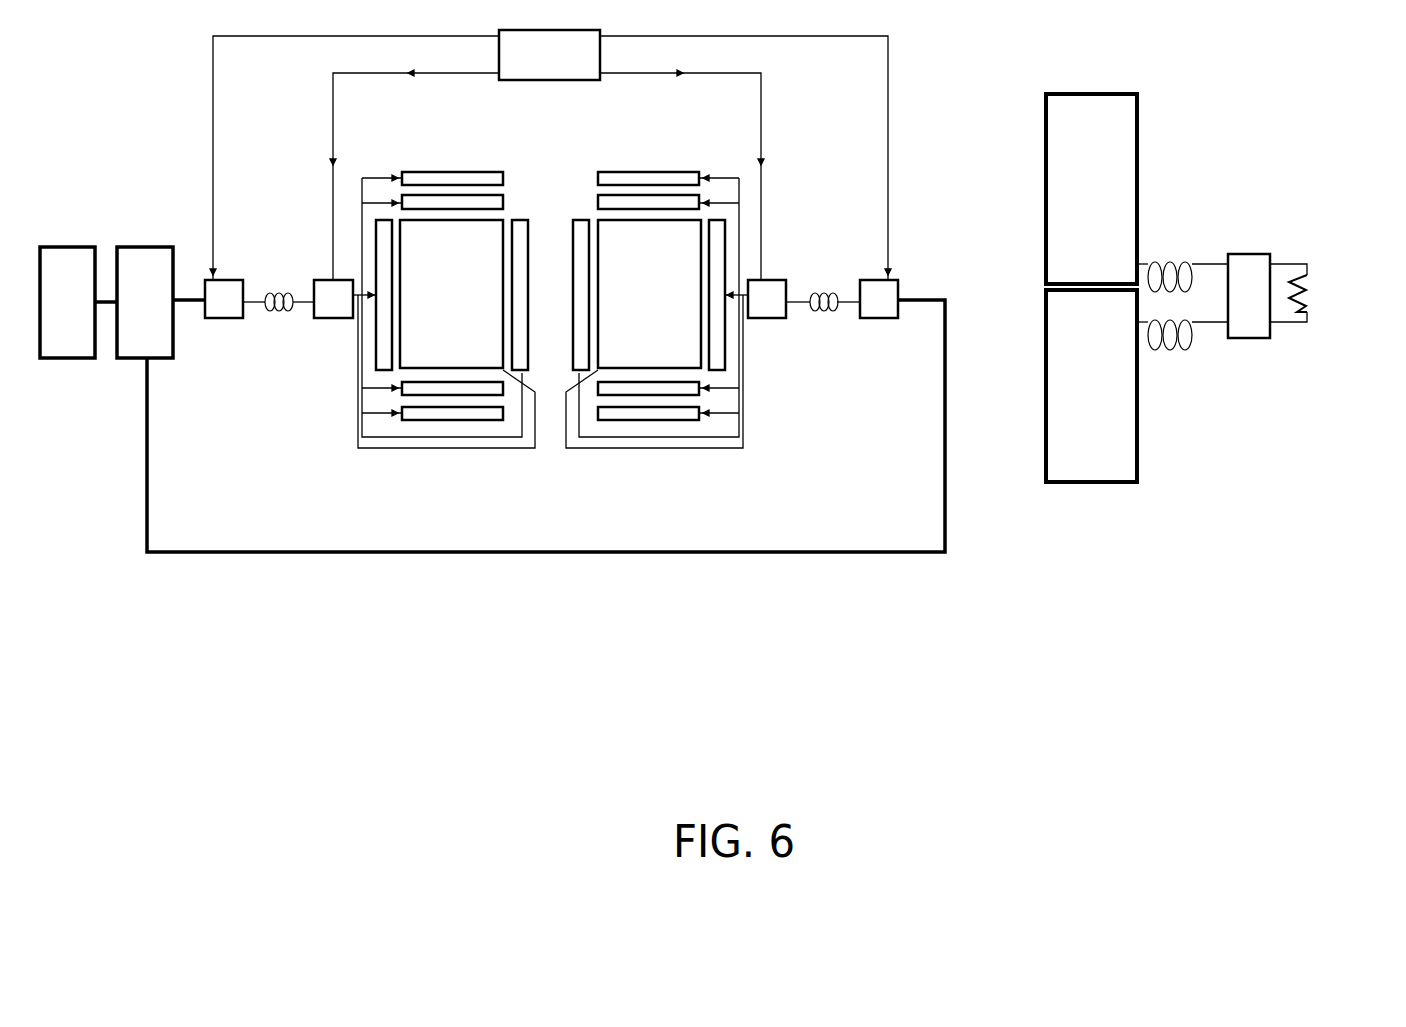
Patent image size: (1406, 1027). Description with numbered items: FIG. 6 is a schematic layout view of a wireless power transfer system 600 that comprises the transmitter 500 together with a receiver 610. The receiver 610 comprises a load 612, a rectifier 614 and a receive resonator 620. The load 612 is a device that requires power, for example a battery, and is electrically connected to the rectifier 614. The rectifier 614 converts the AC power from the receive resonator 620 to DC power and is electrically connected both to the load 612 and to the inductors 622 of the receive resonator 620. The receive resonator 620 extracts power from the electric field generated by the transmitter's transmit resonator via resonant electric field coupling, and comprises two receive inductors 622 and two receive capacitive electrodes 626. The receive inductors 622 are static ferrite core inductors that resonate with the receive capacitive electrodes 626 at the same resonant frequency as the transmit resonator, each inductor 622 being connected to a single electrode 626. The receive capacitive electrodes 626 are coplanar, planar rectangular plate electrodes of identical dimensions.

The transmitter 500 is at (960, 590).
The wireless power transfer system 600 is at (710, 378).
The receiver 610 is at (1377, 634).
The load 612 is at (1305, 287).
The rectifier 614 is at (1250, 340).
The receive resonator 620 is at (1215, 547).
The receive inductors 622 is at (1169, 258).
The receive capacitive electrodes 626 is at (1145, 452).